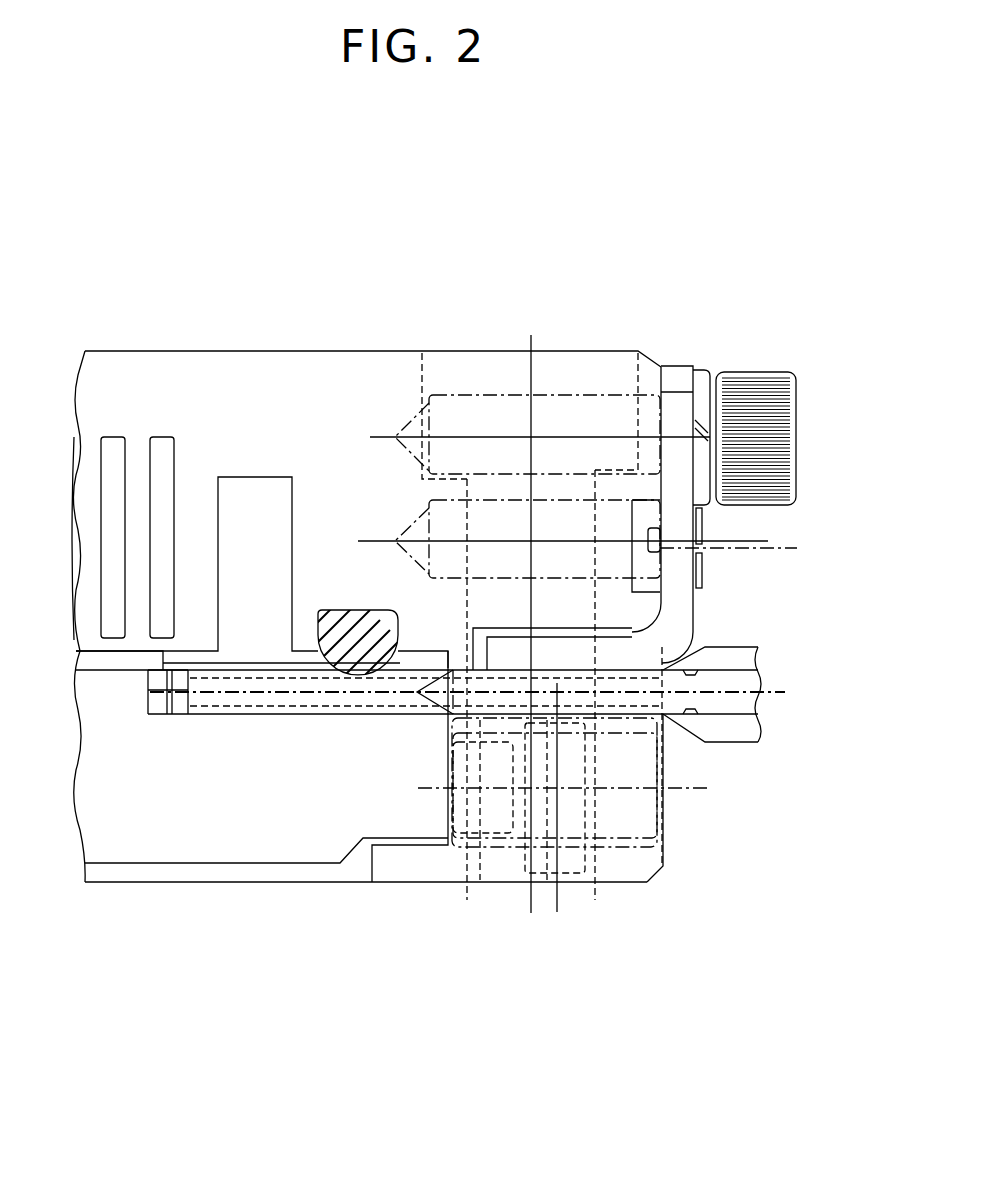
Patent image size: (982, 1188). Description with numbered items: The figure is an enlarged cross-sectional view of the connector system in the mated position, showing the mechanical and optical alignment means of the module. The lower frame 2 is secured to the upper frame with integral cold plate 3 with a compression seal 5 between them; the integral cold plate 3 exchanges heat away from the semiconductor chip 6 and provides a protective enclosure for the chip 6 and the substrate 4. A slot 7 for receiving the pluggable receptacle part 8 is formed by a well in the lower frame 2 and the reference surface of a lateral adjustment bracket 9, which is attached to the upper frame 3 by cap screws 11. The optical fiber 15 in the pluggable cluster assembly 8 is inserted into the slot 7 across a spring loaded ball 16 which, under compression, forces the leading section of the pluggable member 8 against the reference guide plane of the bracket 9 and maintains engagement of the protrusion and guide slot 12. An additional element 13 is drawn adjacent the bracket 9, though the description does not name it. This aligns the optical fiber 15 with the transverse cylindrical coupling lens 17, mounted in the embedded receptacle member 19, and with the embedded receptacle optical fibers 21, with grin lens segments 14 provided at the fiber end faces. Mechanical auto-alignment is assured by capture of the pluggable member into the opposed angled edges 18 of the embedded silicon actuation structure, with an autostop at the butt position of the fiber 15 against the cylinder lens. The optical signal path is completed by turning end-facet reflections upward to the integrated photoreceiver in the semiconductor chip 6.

The lower frame 2 is at (655, 877).
The upper frame with integral cold plate 3 is at (132, 351).
The substrate 4 is at (327, 865).
The compression seal 5 is at (337, 610).
The semiconductor chip 6 is at (152, 663).
The slot 7 is at (667, 720).
The pluggable receptacle part 8 is at (745, 642).
The lateral adjustment bracket 9 is at (675, 366).
The cap screw 11 is at (767, 371).
The protrusion and guide slot 12 is at (598, 662).
The locking pin 13 is at (703, 520).
The grin lens segment 14 is at (423, 695).
The optical fiber 15 is at (773, 695).
The spring loaded ball 16 is at (558, 705).
The transverse cylindrical coupling lens 17 is at (420, 688).
The opposed angled edges 18 is at (432, 685).
The embedded receptacle member 19 is at (207, 712).
The embedded receptacle optical fiber 21 is at (167, 688).